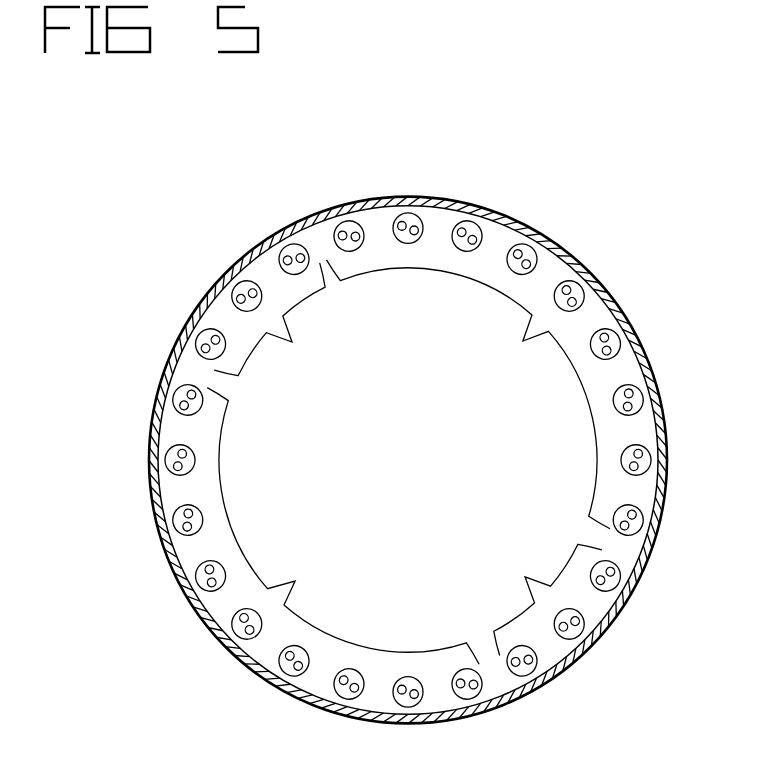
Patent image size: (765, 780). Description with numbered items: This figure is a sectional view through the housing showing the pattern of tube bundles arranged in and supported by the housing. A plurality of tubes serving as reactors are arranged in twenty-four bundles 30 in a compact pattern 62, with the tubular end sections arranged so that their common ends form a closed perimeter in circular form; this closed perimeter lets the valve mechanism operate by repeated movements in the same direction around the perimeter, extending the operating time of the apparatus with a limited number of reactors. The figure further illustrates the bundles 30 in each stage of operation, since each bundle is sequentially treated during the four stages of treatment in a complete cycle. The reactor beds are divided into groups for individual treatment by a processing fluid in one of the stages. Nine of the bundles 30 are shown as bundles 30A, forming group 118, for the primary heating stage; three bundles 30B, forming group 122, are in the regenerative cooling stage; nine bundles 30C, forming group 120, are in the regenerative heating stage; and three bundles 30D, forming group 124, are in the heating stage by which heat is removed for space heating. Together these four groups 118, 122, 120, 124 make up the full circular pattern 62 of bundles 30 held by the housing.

The compact pattern 62 is at (428, 197).
The bundles 30 is at (607, 566).
The bundles for primary heating stage 30A is at (343, 526).
The bundles for regenerative cooling 30B is at (542, 599).
The bundles for regenerative heating 30C is at (469, 394).
The bundles for heating stage 30D is at (291, 319).
The group for primary heating stage 118 is at (406, 652).
The group for regenerative heating 120 is at (581, 384).
The group for regenerative cooling 122 is at (524, 610).
The group for heating stage 124 is at (320, 294).